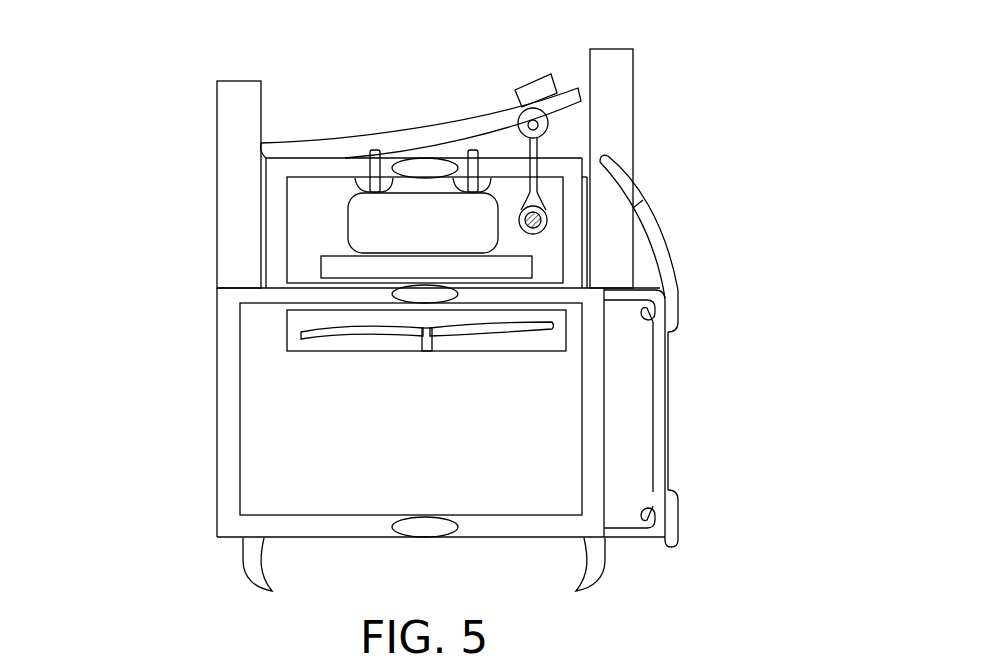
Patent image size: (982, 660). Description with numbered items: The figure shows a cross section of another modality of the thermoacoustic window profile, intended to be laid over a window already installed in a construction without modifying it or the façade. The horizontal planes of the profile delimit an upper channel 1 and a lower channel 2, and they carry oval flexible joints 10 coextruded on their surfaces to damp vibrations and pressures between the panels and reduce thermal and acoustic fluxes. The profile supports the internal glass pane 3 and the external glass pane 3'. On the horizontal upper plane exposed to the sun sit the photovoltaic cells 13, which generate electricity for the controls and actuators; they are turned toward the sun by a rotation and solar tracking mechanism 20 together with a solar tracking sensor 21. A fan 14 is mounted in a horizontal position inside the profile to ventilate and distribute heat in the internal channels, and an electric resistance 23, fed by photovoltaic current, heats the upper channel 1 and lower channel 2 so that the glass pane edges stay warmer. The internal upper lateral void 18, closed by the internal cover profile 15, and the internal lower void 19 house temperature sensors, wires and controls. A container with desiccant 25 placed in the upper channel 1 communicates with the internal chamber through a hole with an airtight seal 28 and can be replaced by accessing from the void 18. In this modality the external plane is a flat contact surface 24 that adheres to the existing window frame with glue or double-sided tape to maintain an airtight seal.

The upper channel 1 is at (332, 218).
The lower channel 2 is at (337, 477).
The internal glass pane 3 is at (668, 165).
The external glass pane 3' is at (180, 184).
The flexible joint 10 is at (425, 168).
The photovoltaic cells 13 is at (338, 140).
The fan 14 is at (287, 330).
The internal cover profile 15 is at (665, 412).
The internal upper lateral void 18 is at (618, 227).
The internal lower void 19 is at (621, 412).
The rotation and solar tracking mechanism 20 is at (535, 144).
The solar tracking sensor 21 is at (557, 82).
The electric resistance 23 is at (532, 267).
The flat contact surface 24 is at (217, 413).
The container with desiccant 25 is at (437, 227).
The airtight seal 28 is at (490, 187).